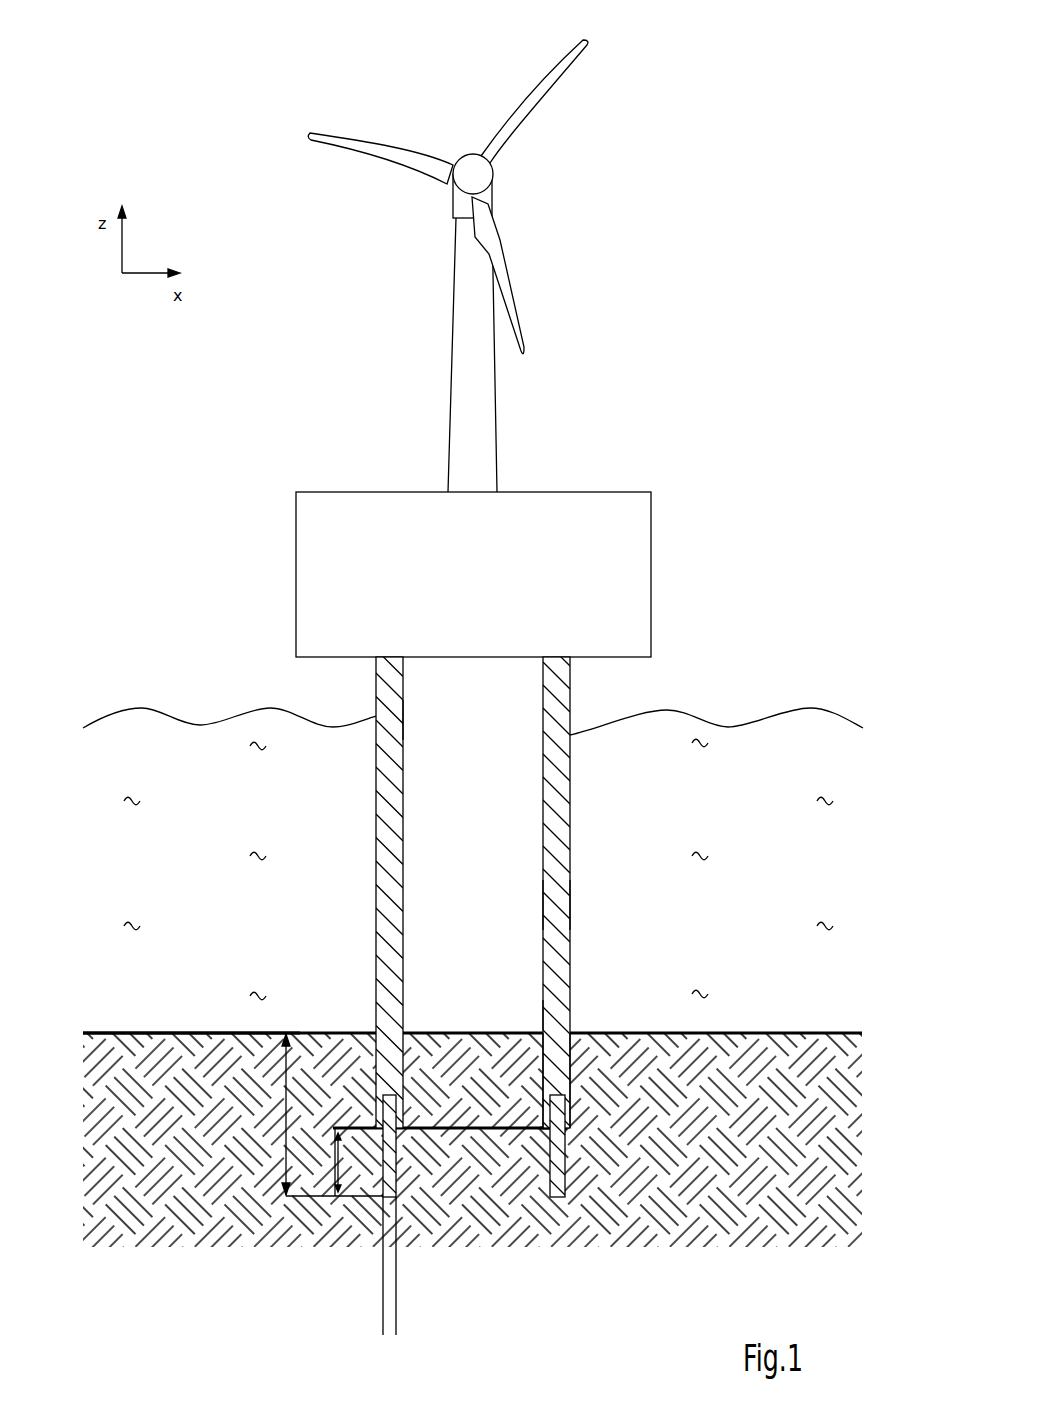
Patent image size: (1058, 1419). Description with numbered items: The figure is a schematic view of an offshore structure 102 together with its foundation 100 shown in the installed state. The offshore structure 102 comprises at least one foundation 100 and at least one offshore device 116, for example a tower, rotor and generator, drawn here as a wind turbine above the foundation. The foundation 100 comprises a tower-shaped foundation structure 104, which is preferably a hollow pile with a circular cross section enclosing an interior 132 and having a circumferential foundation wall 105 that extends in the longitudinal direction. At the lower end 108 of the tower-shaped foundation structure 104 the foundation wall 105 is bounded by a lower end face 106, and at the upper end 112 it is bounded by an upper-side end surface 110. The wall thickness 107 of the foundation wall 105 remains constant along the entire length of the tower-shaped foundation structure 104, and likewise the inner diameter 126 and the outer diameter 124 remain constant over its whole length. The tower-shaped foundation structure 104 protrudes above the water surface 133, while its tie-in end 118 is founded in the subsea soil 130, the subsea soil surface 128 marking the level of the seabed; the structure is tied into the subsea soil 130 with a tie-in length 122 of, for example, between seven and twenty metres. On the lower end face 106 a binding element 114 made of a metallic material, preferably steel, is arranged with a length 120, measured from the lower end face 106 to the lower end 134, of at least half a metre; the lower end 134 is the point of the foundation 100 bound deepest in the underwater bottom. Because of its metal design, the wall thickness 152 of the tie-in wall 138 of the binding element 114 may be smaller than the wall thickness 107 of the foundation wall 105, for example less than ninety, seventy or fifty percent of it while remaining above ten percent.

The foundation 100 is at (706, 941).
The offshore structure 102 is at (750, 134).
The tower-shaped foundation structure 104 is at (570, 822).
The foundation wall 105 is at (568, 904).
The lower end face 106 is at (567, 1130).
The wall thickness 107 is at (338, 789).
The lower end 108 is at (630, 1054).
The upper-side end surface 110 is at (553, 656).
The upper end 112 is at (598, 689).
The binding element 114 is at (547, 1186).
The offshore device 116 is at (360, 383).
The tie-in end 118 is at (266, 1089).
The length 120 is at (335, 1163).
The tie-in length 122 is at (285, 1115).
The outer diameter 124 is at (569, 965).
The inner diameter 126 is at (543, 892).
The subsea soil surface 128 is at (210, 1030).
The subsea soil 130 is at (740, 1162).
The interior 132 is at (428, 703).
The water surface 133 is at (143, 706).
The lower end 134 is at (557, 1197).
The tie-in wall 138 is at (533, 1126).
The wall thickness 152 is at (427, 1327).